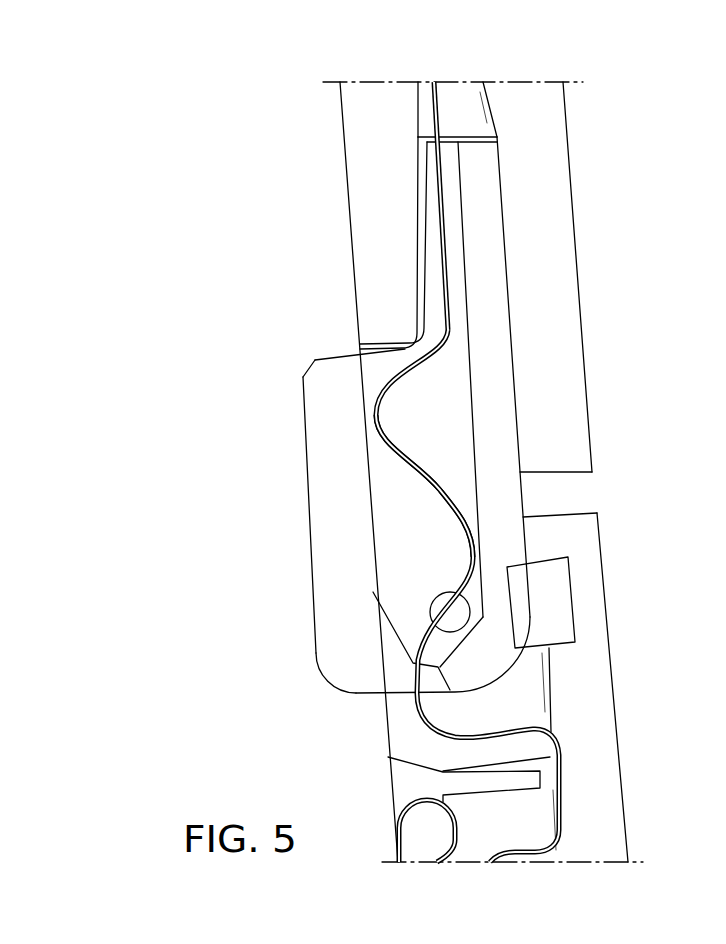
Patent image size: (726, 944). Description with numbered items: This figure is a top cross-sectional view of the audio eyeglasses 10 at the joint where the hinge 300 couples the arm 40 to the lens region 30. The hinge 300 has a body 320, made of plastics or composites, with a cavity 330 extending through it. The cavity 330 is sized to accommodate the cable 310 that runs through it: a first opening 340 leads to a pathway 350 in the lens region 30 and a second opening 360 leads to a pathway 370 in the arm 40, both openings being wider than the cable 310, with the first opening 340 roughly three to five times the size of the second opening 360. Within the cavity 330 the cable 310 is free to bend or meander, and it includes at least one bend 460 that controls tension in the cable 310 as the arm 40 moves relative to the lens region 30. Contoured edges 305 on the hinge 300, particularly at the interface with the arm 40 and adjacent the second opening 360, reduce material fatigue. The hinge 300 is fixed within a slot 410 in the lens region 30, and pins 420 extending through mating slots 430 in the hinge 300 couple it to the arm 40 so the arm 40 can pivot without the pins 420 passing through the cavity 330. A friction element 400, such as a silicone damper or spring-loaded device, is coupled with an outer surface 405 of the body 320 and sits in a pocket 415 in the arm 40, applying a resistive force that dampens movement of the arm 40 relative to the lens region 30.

The audio eyeglasses 10 is at (112, 203).
The lens region 30 is at (533, 282).
The arm 40 is at (582, 707).
The hinge 300 is at (247, 408).
The contoured edges 305 is at (302, 362).
The cable 310 is at (443, 488).
The body 320 is at (310, 550).
The cavity 330 is at (460, 393).
The first opening 340 is at (428, 130).
The pathway 350 is at (450, 98).
The second opening 360 is at (408, 683).
The pathway 370 is at (453, 702).
The friction element 400 is at (557, 602).
The outer surface 405 is at (525, 492).
The slot 410 is at (510, 215).
The pocket 415 is at (578, 618).
The pins 420 is at (440, 607).
The mating slots 430 is at (427, 590).
The bend 460 is at (372, 438).